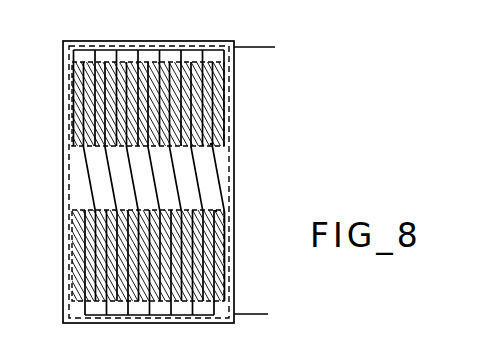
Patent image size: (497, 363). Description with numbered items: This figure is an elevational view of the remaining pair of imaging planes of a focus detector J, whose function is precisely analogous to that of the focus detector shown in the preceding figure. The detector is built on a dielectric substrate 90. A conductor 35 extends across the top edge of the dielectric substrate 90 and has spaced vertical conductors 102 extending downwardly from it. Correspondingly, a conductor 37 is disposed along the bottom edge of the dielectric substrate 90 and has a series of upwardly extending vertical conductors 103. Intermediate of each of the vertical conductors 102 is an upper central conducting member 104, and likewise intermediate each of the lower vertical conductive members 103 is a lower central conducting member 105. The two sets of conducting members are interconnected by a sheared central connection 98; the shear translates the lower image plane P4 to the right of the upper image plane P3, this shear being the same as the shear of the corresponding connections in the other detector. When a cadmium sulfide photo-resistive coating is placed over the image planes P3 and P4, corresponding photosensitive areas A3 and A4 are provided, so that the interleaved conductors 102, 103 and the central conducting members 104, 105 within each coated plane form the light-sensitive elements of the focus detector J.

The focus detector J is at (92, 41).
The conductor 35 is at (261, 47).
The conductor 37 is at (261, 315).
The dielectric substrate 90 is at (231, 140).
The sheared central connection 98 is at (88, 173).
The spaced vertical conductors 102 is at (219, 49).
The upwardly extending vertical conductors 103 is at (210, 315).
The upper central conducting member 104 is at (213, 72).
The lower central conducting member 105 is at (202, 288).
The upper image plane P3 is at (217, 101).
The lower image plane P4 is at (228, 244).
The photosensitive area A3 is at (210, 142).
The photosensitive area A4 is at (215, 212).